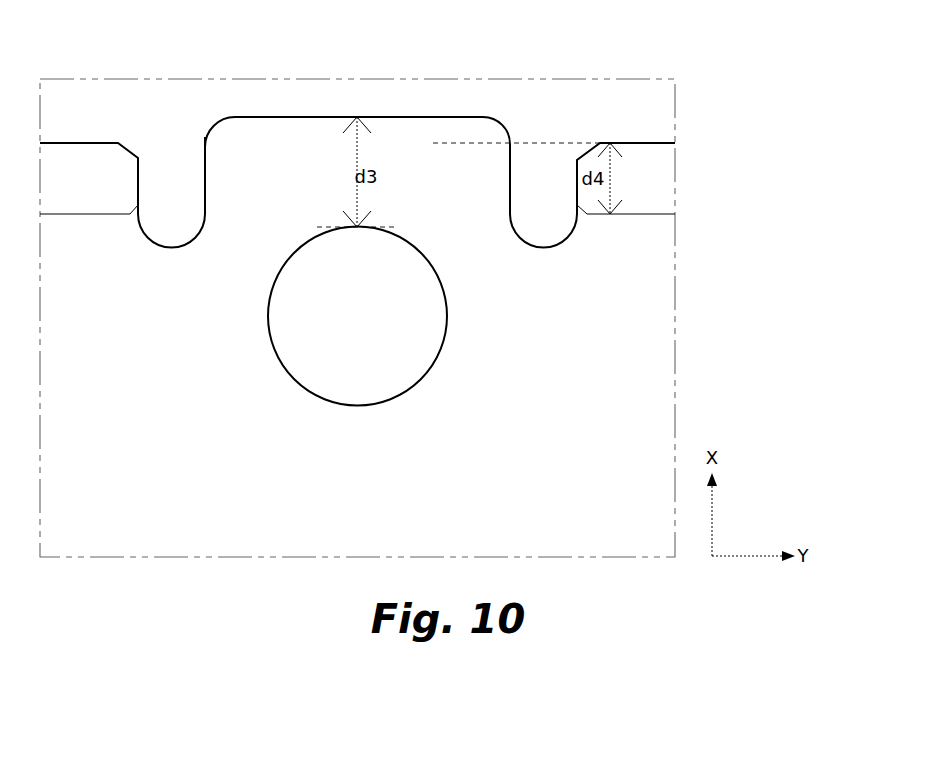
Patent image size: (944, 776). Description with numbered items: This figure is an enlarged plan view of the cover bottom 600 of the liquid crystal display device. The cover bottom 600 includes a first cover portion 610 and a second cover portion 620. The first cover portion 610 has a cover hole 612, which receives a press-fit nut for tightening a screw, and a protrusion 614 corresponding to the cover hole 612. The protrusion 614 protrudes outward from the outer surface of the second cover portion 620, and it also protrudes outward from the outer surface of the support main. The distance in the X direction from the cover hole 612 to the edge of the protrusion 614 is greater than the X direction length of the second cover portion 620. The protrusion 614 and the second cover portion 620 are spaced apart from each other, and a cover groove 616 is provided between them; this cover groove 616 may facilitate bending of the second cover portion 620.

The cover bottom 600 is at (812, 192).
The first cover portion 610 is at (638, 275).
The cover hole 612 is at (447, 320).
The protrusion 614 is at (280, 157).
The cover groove 616 is at (173, 207).
The second cover portion 620 is at (638, 192).